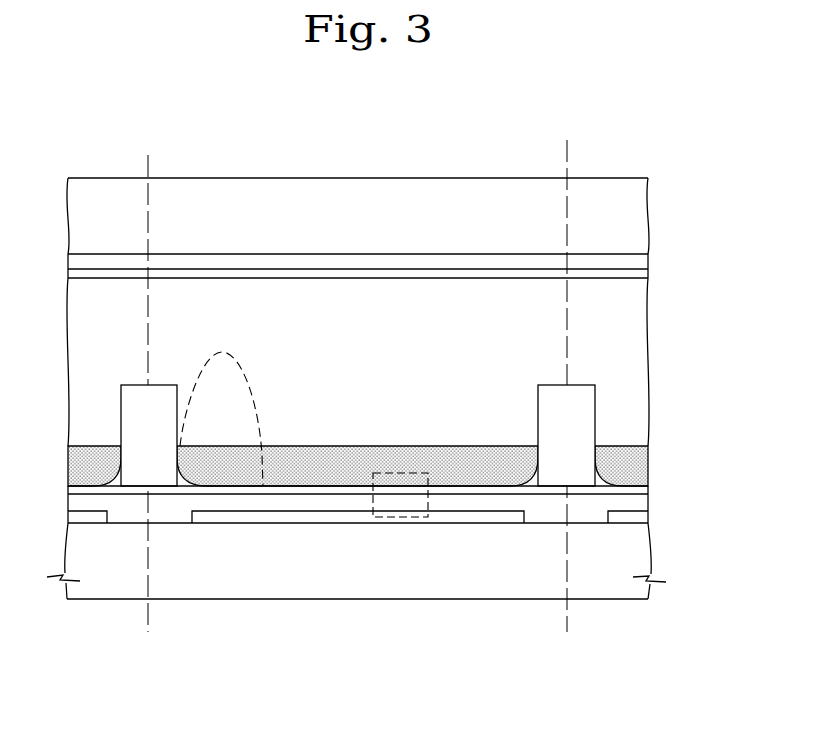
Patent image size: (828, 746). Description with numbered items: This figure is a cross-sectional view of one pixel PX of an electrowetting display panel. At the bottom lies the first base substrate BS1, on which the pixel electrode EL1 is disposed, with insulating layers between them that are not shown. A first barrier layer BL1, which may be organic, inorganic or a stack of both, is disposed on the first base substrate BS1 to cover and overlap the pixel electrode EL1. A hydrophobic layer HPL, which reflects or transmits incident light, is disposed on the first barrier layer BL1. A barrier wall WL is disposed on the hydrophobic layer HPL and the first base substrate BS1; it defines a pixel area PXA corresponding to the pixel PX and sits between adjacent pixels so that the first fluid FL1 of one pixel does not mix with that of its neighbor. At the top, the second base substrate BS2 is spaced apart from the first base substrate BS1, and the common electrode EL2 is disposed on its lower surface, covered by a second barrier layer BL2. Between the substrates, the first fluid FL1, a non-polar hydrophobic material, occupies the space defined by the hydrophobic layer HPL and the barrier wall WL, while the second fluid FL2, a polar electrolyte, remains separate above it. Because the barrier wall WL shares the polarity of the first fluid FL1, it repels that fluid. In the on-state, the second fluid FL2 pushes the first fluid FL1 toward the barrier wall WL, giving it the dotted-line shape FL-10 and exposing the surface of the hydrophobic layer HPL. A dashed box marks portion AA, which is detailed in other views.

The second base substrate BS2 is at (640, 214).
The common electrode EL2 is at (640, 262).
The second barrier layer BL2 is at (640, 273).
The second fluid FL2 is at (637, 346).
The barrier wall WL is at (585, 413).
The first fluid FL1 is at (632, 466).
The hydrophobic layer HPL is at (643, 492).
The first barrier layer BL1 is at (638, 503).
The pixel electrode EL1 is at (643, 515).
The first base substrate BS1 is at (643, 557).
The shape of the first fluid FL-10 is at (253, 383).
The portion AA is at (405, 473).
The pixel area PXA is at (562, 140).
The pixel PX is at (566, 626).